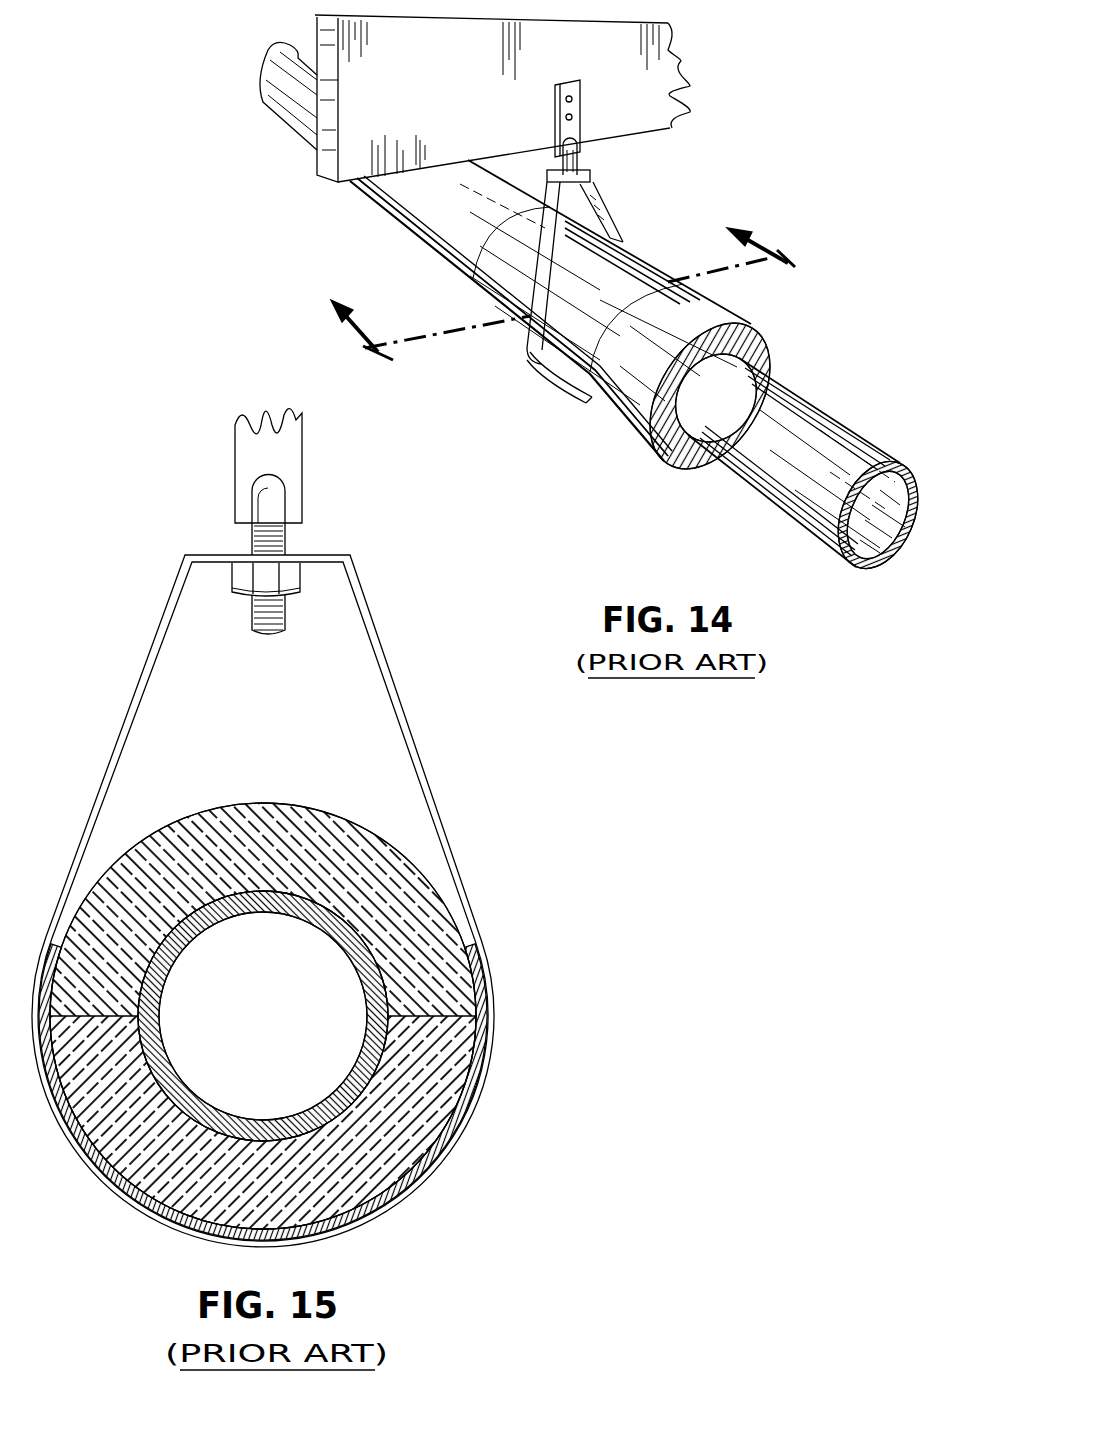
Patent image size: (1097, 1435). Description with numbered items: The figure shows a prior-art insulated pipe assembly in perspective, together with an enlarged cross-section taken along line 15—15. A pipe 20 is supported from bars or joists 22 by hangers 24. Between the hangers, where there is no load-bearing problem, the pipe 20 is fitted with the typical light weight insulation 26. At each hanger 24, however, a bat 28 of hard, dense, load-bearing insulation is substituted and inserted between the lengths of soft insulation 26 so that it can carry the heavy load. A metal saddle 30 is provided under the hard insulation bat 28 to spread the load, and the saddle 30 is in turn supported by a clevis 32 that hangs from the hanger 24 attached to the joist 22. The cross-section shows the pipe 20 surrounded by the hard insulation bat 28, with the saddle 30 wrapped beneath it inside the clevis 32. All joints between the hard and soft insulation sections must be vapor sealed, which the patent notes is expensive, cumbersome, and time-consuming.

In FIG. 14, the section line 15— 15 is at (550, 280).
In FIG. 14, the pipe 20 is at (812, 510).
In FIG. 15, the pipe 20 is at (218, 930).
In FIG. 14, the bars or joists 22 is at (377, 123).
In FIG. 14, the hangers 24 is at (604, 150).
In FIG. 15, the hangers 24 is at (320, 487).
In FIG. 14, the light weight insulation 26 is at (677, 470).
In FIG. 14, the bat of hard, load-bearing insulation 28 is at (507, 257).
In FIG. 15, the bat of hard, load-bearing insulation 28 is at (226, 835).
In FIG. 14, the metal saddle 30 is at (547, 363).
In FIG. 15, the metal saddle 30 is at (491, 963).
In FIG. 14, the clevis 32 is at (612, 228).
In FIG. 15, the clevis 32 is at (424, 748).